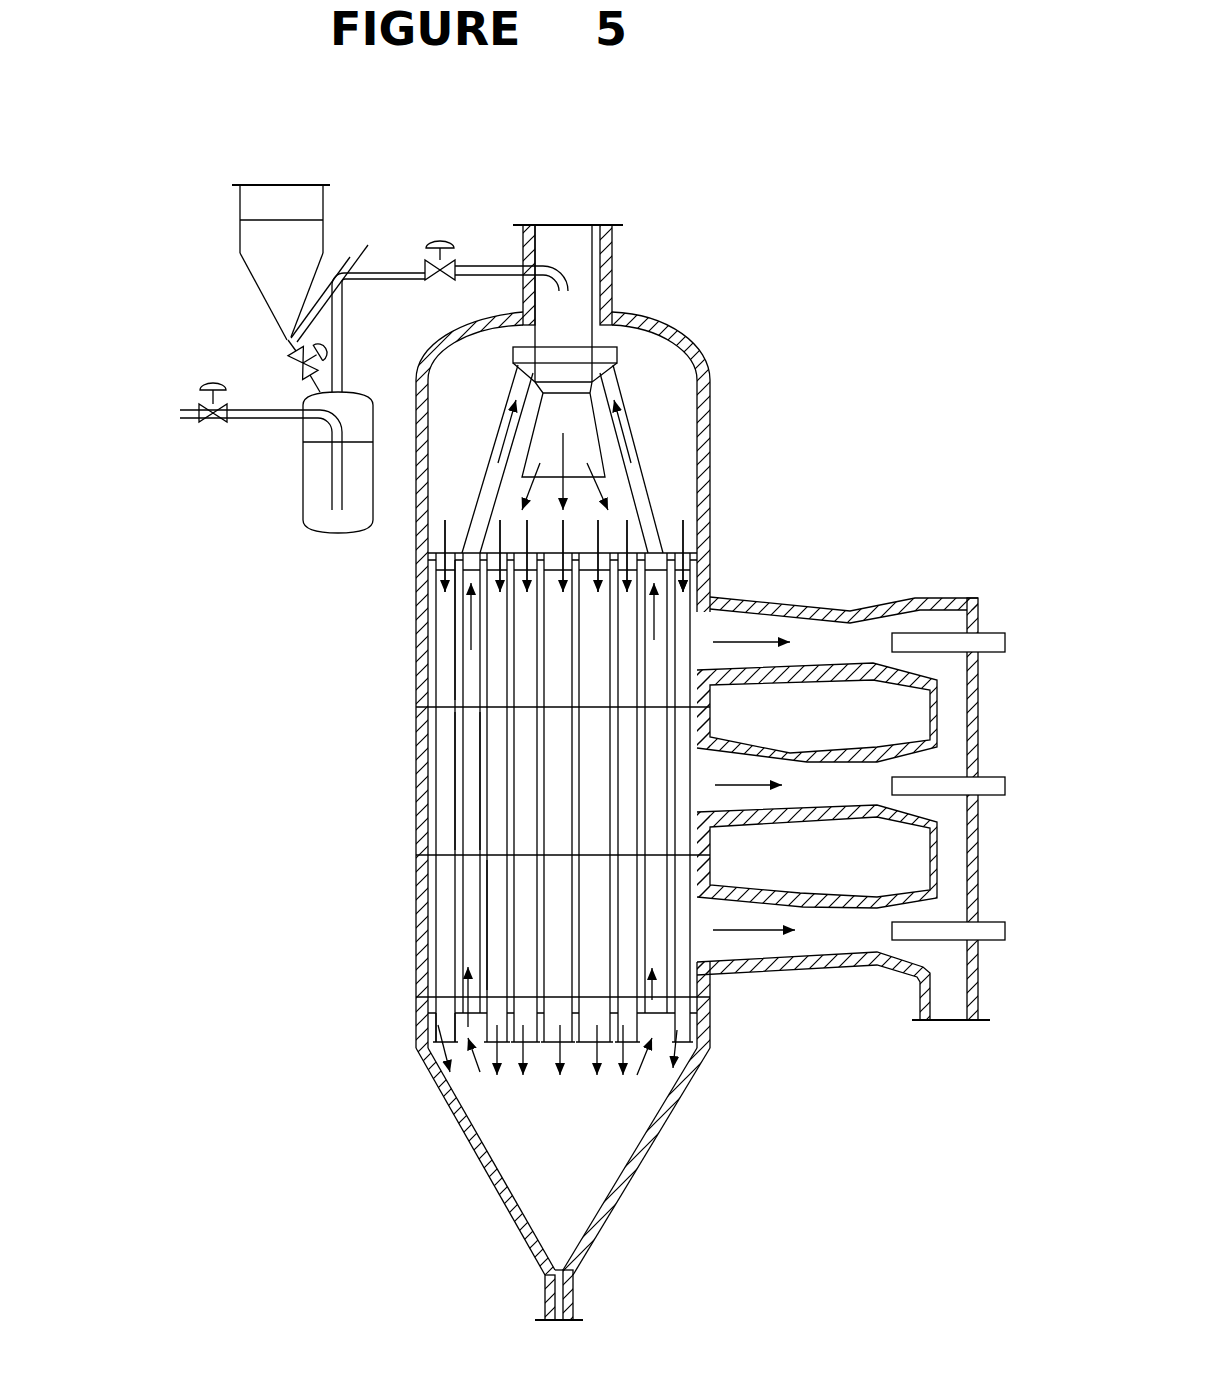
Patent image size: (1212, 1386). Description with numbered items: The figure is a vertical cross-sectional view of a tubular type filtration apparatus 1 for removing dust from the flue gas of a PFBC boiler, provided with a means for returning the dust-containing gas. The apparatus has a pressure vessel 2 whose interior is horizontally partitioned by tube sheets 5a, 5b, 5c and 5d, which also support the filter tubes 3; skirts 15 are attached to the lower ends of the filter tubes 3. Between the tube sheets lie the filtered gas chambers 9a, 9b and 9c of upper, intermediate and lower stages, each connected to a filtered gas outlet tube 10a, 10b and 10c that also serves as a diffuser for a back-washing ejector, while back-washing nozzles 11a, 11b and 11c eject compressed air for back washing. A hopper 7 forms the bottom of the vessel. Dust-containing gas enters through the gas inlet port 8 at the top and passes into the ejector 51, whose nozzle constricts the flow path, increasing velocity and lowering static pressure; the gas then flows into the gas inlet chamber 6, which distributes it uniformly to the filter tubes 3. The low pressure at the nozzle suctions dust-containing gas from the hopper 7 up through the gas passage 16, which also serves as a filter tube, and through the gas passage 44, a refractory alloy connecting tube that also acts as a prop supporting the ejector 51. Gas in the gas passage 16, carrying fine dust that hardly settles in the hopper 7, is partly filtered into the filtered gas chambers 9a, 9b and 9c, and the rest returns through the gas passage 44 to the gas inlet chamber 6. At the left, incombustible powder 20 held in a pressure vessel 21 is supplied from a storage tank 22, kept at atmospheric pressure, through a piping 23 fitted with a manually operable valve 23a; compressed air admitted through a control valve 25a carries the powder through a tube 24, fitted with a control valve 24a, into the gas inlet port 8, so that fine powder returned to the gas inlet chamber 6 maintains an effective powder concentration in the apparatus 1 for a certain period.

The filtration apparatus 1 is at (713, 377).
The pressure vessel 2 is at (712, 427).
The filter tubes 3 is at (440, 743).
The tube sheet 5a is at (428, 560).
The tube sheet 5b is at (428, 707).
The tube sheet 5c is at (428, 855).
The tube sheet 5d is at (428, 994).
The gas inlet chamber 6 is at (658, 497).
The hopper 7 is at (525, 1157).
The gas inlet port 8 is at (567, 242).
The filtered gas chamber 9a is at (457, 647).
The filtered gas chamber 9b is at (455, 790).
The filtered gas chamber 9c is at (485, 922).
The filtered gas outlet tube 10a is at (740, 598).
The filtered gas outlet tube 10b is at (762, 748).
The filtered gas outlet tube 10c is at (765, 890).
The back-washing nozzle 11a is at (892, 642).
The back-washing nozzle 11b is at (892, 785).
The back-washing nozzle 11c is at (892, 930).
The skirts 15 is at (436, 1028).
The gas passage 16 is at (475, 832).
The incombustible powder 20 is at (320, 498).
The pressure vessel 21 is at (303, 470).
The storage tank 22 is at (335, 185).
The piping 23 is at (337, 275).
The manually operable valve 23a is at (287, 358).
The tube 24 is at (500, 264).
The control valve 24a is at (438, 242).
The control valve 25a is at (207, 422).
The gas passage 44 is at (647, 477).
The ejector 51 is at (630, 352).